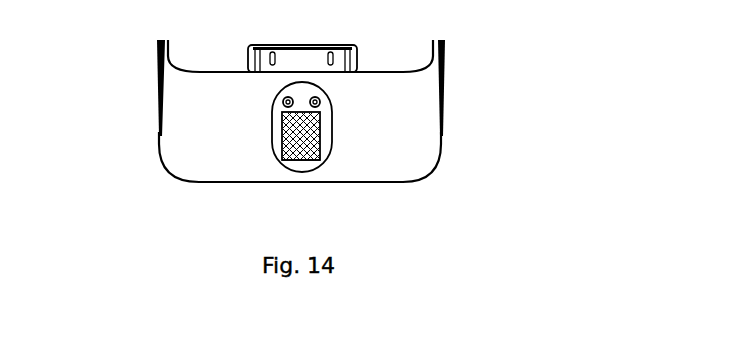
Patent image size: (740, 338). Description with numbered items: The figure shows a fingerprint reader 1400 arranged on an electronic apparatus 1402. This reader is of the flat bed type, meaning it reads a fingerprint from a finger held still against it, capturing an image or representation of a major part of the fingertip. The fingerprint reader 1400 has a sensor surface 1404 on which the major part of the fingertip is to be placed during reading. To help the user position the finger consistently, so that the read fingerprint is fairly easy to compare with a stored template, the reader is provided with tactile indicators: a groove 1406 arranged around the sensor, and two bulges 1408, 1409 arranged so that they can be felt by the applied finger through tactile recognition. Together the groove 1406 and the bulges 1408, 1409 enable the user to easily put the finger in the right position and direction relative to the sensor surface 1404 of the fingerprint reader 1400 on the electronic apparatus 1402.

The fingerprint reader 1400 is at (278, 148).
The electronic apparatus 1402 is at (188, 144).
The sensor surface 1404 is at (303, 148).
The groove 1406 is at (308, 170).
The bulge 1408 is at (311, 100).
The bulge 1409 is at (284, 99).